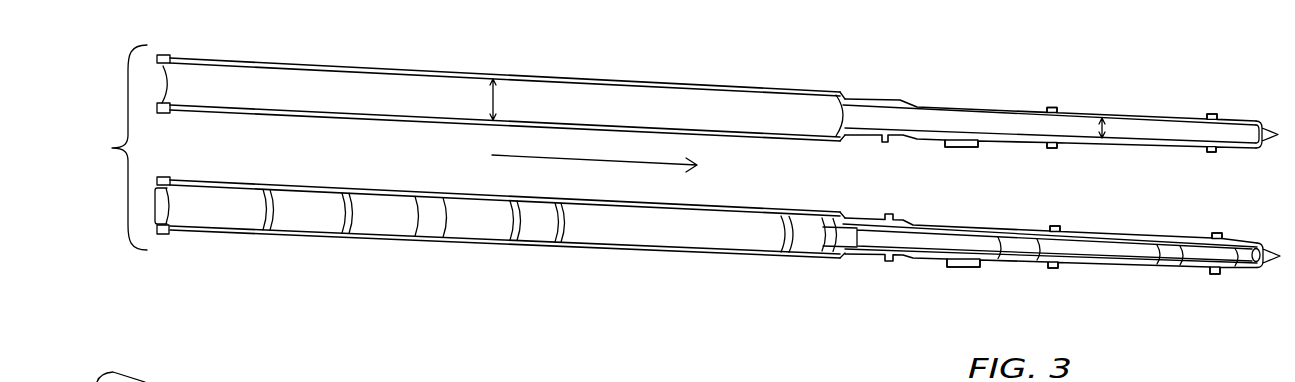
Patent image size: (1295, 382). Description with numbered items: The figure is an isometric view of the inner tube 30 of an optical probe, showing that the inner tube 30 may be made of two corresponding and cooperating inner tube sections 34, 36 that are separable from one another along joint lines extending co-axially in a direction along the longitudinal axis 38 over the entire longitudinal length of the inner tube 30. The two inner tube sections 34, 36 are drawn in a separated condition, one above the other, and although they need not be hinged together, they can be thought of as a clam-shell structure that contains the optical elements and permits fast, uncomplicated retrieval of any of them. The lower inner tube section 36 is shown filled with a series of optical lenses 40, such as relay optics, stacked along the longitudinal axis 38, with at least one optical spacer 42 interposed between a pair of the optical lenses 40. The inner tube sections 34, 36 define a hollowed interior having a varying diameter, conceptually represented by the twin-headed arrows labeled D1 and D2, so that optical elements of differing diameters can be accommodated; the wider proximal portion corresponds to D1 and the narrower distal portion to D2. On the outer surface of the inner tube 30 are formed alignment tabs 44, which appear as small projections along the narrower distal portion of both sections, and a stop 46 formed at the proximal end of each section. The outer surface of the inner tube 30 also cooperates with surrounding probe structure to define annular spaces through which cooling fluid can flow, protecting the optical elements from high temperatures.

The inner tube 30 is at (112, 148).
The inner tube section 34 is at (627, 76).
The inner tube section 36 is at (623, 257).
The longitudinal axis 38 is at (590, 162).
The optical lenses 40 is at (468, 222).
The optical spacer 42 is at (552, 229).
The alignment tab 44 is at (1212, 113).
The stop 46 is at (160, 113).
The hollowed interior diameter D1 is at (498, 96).
The hollowed interior diameter D2 is at (1110, 126).